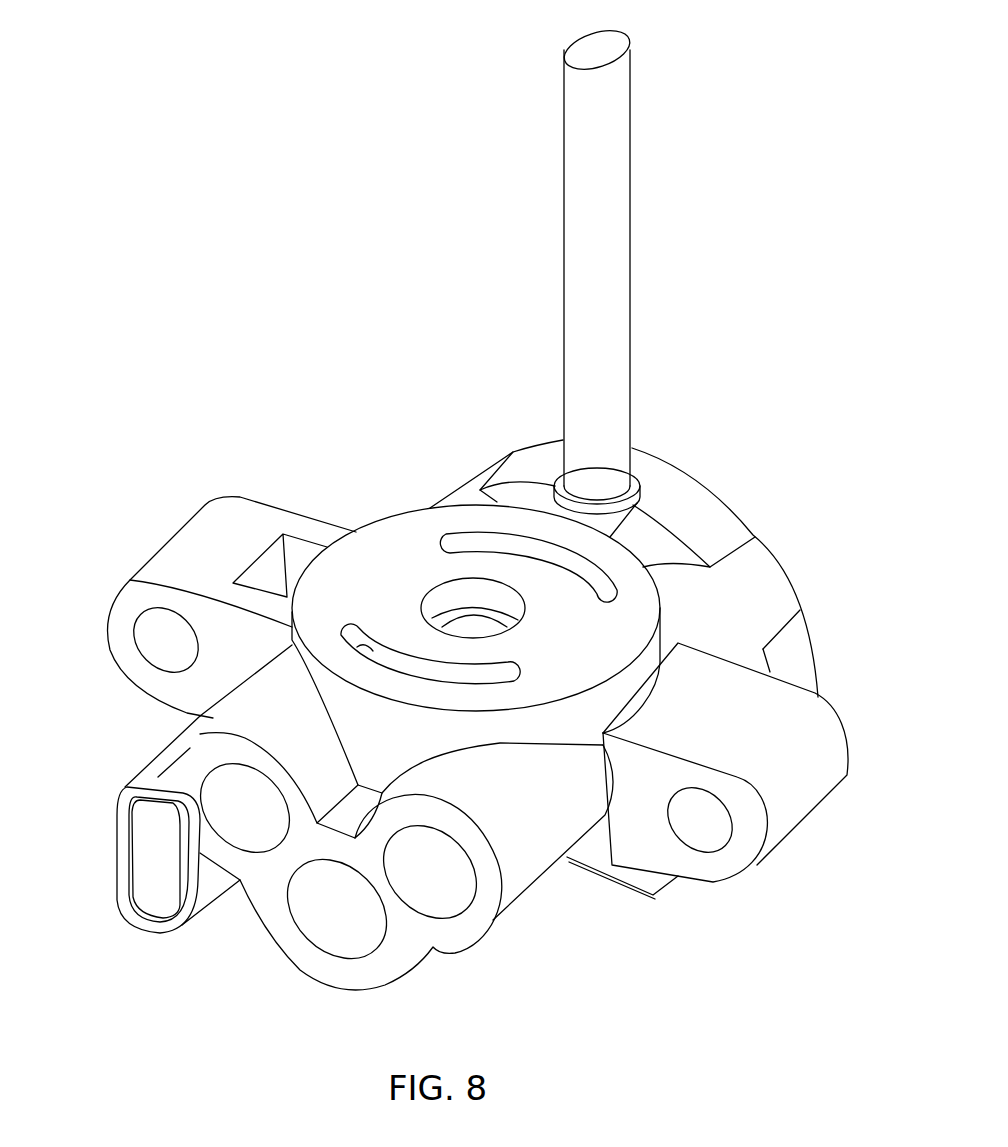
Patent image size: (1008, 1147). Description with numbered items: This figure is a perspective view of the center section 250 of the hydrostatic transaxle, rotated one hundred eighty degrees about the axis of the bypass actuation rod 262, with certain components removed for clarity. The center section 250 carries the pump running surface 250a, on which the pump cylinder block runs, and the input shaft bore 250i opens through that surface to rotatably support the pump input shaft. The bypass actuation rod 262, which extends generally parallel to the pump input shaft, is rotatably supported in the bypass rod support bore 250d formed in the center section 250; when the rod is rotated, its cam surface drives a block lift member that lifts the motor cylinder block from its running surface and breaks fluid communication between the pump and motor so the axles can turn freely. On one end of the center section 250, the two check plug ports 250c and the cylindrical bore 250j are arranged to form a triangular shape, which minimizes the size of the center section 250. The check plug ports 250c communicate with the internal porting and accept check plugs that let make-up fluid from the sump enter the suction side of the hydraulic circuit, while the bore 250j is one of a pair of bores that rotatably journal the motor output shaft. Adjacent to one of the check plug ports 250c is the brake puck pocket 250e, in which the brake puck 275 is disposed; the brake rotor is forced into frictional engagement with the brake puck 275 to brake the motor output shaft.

The bypass actuation rod 262 is at (595, 50).
The bypass rod support bore 250d is at (613, 493).
The center section 250 is at (408, 759).
The pump running surface 250a is at (594, 645).
The input shaft bore 250i is at (468, 625).
The brake puck pocket 250e is at (177, 883).
The brake puck 275 is at (148, 843).
The check plug ports 250c is at (250, 830).
The cylindrical bore 250j is at (340, 937).